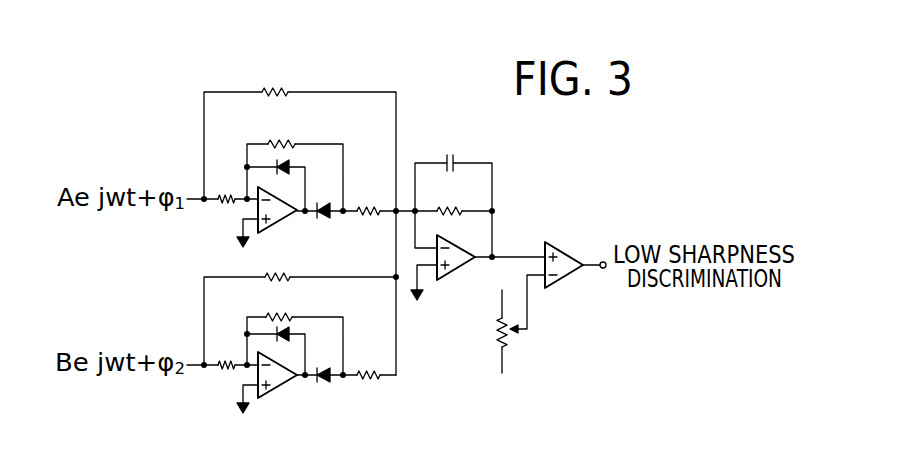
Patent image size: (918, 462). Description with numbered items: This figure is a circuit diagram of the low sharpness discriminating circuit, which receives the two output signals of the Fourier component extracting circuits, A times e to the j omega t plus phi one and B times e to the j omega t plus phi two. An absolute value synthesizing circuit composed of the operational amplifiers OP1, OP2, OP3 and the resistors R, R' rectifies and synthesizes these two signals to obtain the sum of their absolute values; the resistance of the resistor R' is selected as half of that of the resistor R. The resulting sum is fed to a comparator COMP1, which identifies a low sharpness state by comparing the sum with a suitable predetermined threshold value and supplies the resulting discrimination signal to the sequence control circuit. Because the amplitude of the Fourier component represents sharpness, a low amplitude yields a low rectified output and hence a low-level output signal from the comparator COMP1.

The resistor R is at (350, 201).
The resistor R' is at (368, 264).
The operational amplifier OP1 is at (282, 222).
The operational amplifier OP2 is at (282, 388).
The operational amplifier OP3 is at (462, 272).
The comparator COMP1 is at (573, 251).